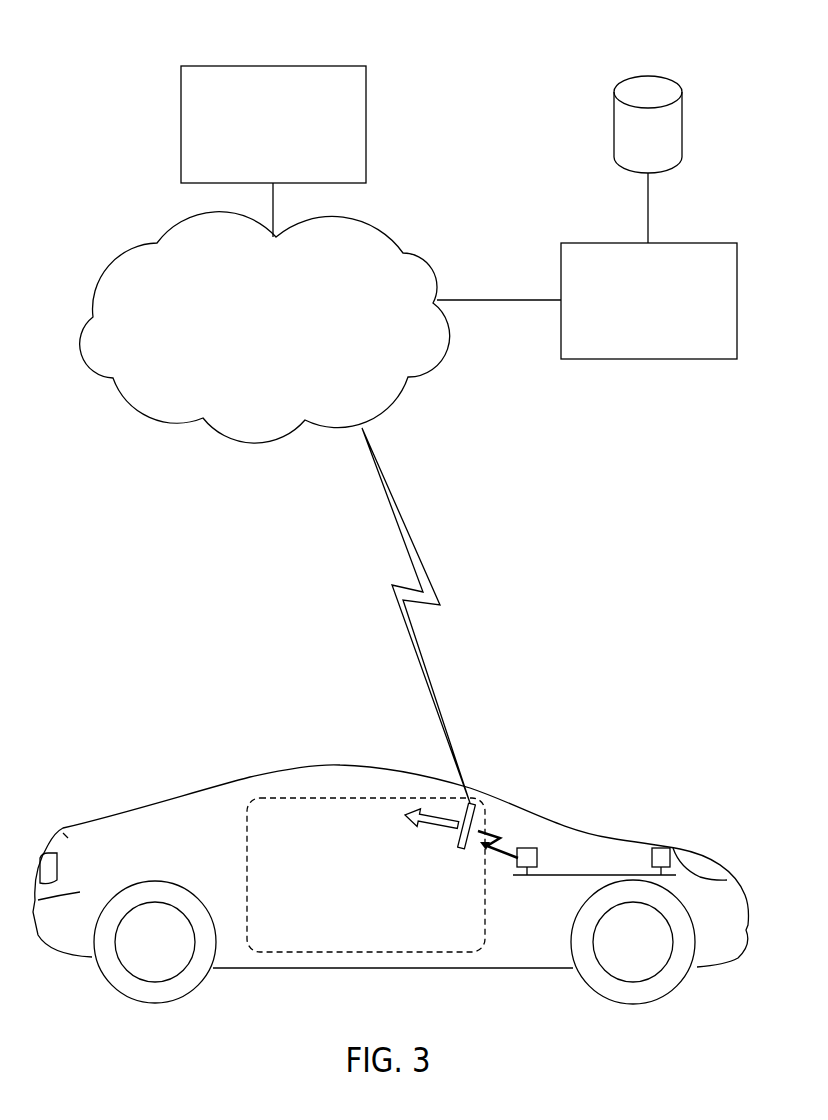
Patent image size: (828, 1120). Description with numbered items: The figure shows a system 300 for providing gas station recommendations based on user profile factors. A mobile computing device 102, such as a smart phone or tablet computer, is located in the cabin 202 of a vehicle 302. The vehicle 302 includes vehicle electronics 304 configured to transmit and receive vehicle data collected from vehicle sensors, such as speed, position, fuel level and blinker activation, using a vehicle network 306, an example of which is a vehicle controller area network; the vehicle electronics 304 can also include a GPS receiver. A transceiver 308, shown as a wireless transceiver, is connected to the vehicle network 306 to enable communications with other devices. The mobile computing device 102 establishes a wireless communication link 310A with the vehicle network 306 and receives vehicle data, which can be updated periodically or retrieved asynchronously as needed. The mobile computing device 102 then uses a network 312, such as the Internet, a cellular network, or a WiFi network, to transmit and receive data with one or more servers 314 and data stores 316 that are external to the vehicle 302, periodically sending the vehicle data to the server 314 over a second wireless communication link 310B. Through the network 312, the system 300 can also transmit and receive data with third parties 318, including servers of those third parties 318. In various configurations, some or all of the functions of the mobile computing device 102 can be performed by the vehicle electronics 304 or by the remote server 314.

The system 300 is at (568, 60).
The third parties 318 is at (275, 65).
The network 312 is at (252, 335).
The data store 316 is at (684, 125).
The server 314 is at (646, 360).
The second wireless communication link 310B is at (418, 550).
The vehicle 302 is at (311, 768).
The cabin 202 is at (372, 795).
The mobile computing device 102 is at (478, 800).
The wireless communication link 310A is at (498, 836).
The transceiver 308 is at (534, 848).
The vehicle network 306 is at (581, 875).
The vehicle electronics 304 is at (655, 848).